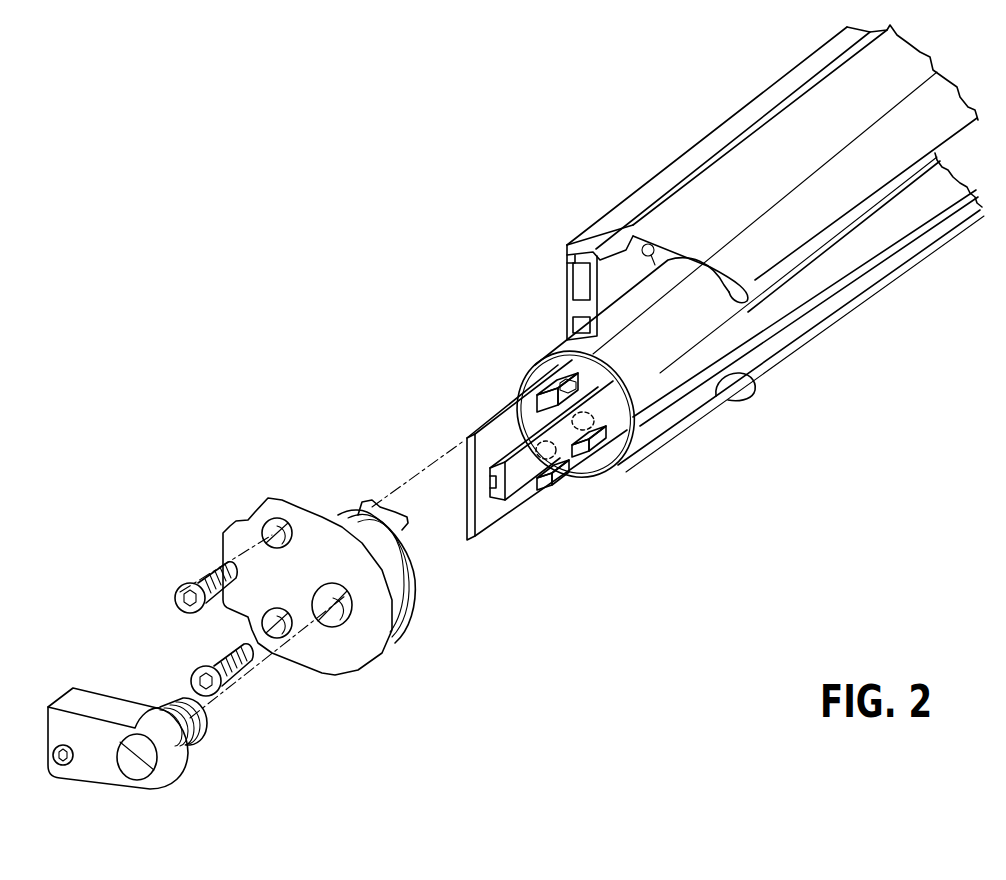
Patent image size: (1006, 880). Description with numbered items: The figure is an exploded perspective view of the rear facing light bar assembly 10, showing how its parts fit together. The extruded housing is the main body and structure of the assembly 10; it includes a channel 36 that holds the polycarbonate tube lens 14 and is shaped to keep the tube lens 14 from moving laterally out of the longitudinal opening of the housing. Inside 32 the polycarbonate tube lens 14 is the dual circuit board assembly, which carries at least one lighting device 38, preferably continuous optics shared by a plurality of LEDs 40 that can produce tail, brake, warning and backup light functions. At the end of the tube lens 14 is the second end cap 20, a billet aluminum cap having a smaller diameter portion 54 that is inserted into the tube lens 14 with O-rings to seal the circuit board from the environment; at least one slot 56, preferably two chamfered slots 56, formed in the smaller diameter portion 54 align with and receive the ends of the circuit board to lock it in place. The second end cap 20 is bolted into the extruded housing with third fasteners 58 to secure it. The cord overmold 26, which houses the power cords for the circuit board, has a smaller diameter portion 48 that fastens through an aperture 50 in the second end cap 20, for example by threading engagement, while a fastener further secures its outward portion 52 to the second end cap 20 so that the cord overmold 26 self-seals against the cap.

The assembly 10 is at (467, 105).
The polycarbonate tube lens 14 is at (587, 335).
The second end cap 20 is at (410, 647).
The cord overmold 26 is at (164, 785).
The inside of the polycarbonate tube lens 32 is at (547, 374).
The channel 36 is at (732, 298).
The lighting device 38 is at (517, 482).
The LEDs 40 is at (591, 429).
The smaller diameter portion of the cord overmold 48 is at (203, 727).
The aperture 50 is at (333, 613).
The outward portion of the cord overmold 52 is at (97, 748).
The smaller diameter portion of the end cap 54 is at (417, 577).
The slot 56 is at (372, 510).
The third fasteners 58 is at (200, 572).